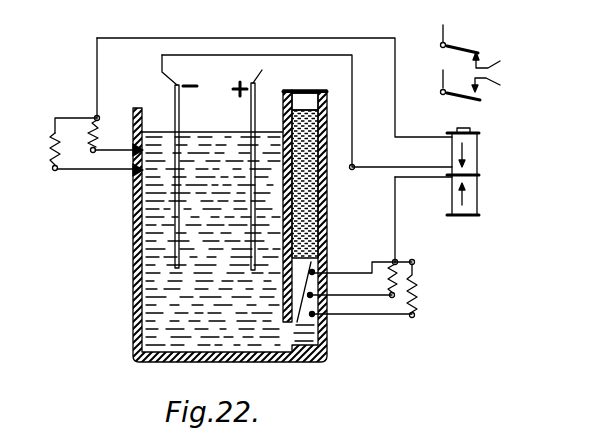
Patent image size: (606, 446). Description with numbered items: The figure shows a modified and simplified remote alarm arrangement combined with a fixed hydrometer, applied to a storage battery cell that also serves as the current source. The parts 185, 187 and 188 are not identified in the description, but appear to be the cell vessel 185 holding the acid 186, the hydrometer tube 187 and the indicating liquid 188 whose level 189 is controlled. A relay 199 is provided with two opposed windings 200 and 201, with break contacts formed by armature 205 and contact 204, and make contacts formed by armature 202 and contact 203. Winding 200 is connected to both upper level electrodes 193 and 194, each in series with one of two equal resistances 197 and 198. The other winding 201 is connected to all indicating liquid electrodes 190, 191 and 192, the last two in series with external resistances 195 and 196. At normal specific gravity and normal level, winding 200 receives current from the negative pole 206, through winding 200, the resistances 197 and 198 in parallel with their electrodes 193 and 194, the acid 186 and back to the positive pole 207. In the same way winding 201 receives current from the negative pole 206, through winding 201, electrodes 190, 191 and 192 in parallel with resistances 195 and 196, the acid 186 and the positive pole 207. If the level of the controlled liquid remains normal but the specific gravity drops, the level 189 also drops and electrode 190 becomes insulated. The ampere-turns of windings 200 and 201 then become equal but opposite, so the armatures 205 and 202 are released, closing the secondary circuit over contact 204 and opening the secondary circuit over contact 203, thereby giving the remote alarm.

The container 185 is at (133, 262).
The acid 186 is at (155, 283).
The tube 187 is at (303, 102).
The porous material 188 is at (308, 116).
The level 189 is at (322, 248).
The indicating liquid electrode 190 is at (311, 271).
The indicating liquid electrode 191 is at (309, 294).
The indicating liquid electrode 192 is at (311, 313).
The upper level electrode 193 is at (151, 156).
The upper level electrode 194 is at (151, 179).
The external resistance 195 is at (388, 282).
The external resistance 196 is at (418, 300).
The resistance 197 is at (98, 141).
The resistance 198 is at (54, 170).
The relay 199 is at (468, 128).
The winding 200 is at (478, 160).
The winding 201 is at (476, 195).
The armature 202 is at (458, 45).
The make contact 203 is at (501, 61).
The break contact 204 is at (501, 87).
The armature 205 is at (453, 98).
The negative pole 206 is at (175, 98).
The positive pole 207 is at (263, 170).